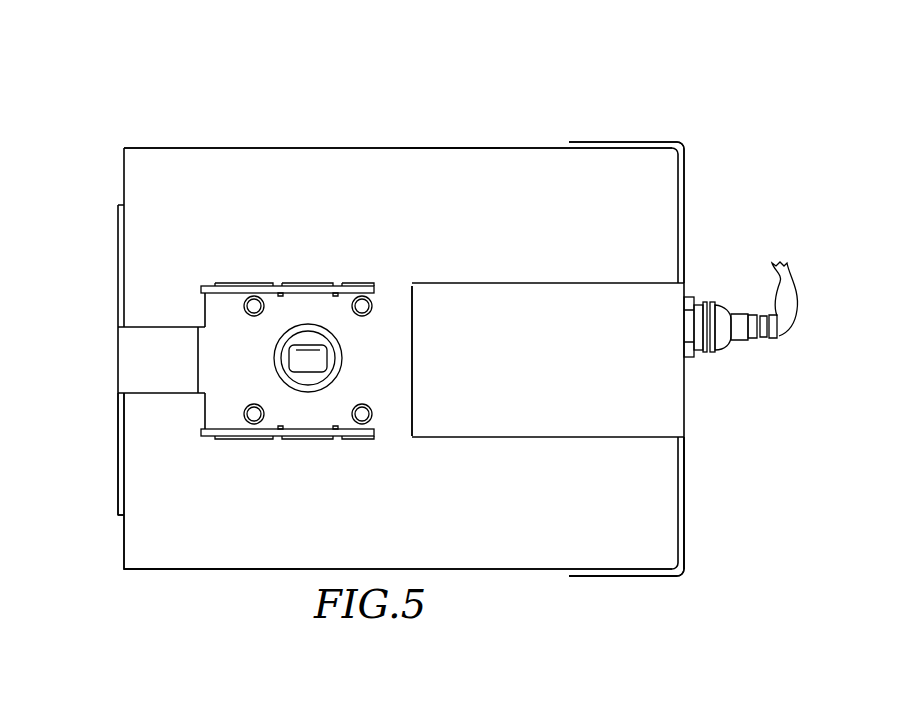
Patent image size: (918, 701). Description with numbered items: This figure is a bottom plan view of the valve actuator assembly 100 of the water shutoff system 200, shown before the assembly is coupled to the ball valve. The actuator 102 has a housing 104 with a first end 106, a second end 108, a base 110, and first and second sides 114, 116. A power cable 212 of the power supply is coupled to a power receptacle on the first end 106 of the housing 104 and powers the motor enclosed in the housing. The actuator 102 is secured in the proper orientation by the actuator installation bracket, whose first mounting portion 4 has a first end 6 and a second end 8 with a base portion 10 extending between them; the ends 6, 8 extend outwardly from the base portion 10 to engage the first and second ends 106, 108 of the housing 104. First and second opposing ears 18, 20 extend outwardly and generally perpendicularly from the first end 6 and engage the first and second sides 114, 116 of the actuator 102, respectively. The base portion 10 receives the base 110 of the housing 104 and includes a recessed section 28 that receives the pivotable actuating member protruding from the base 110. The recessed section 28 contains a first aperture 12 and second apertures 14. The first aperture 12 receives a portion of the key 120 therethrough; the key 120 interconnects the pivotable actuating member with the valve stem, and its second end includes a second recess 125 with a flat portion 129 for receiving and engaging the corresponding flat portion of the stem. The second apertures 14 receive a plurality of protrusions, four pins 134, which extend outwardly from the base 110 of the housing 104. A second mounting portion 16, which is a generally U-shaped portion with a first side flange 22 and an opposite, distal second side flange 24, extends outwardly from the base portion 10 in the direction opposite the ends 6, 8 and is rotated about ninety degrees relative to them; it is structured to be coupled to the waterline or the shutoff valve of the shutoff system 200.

The valve actuator assembly 100 is at (128, 112).
The first mounting portion 4 is at (700, 207).
The first ear 18 is at (612, 142).
The second ear 20 is at (667, 577).
The first end 106 is at (676, 523).
The first side 114 is at (408, 148).
The housing 104 is at (500, 148).
The second side 116 is at (497, 570).
The actuator 102 is at (236, 577).
The base 110 is at (510, 225).
The base portion 10 is at (147, 377).
The second end 8 is at (117, 348).
The second end 108 is at (134, 427).
The second mounting portion 16 is at (200, 305).
The recessed section 28 is at (403, 320).
The first side flange 22 is at (238, 285).
The second side flange 24 is at (232, 437).
The pins 134 is at (260, 297).
The second apertures 14 is at (370, 300).
The key 120 is at (336, 331).
The first aperture 12 is at (338, 373).
The flat portion 129 is at (290, 367).
The second recess 125 is at (329, 352).
The first end 6 is at (685, 398).
The power cable 212 is at (790, 278).
The fluid shutoff system 200 is at (505, 669).